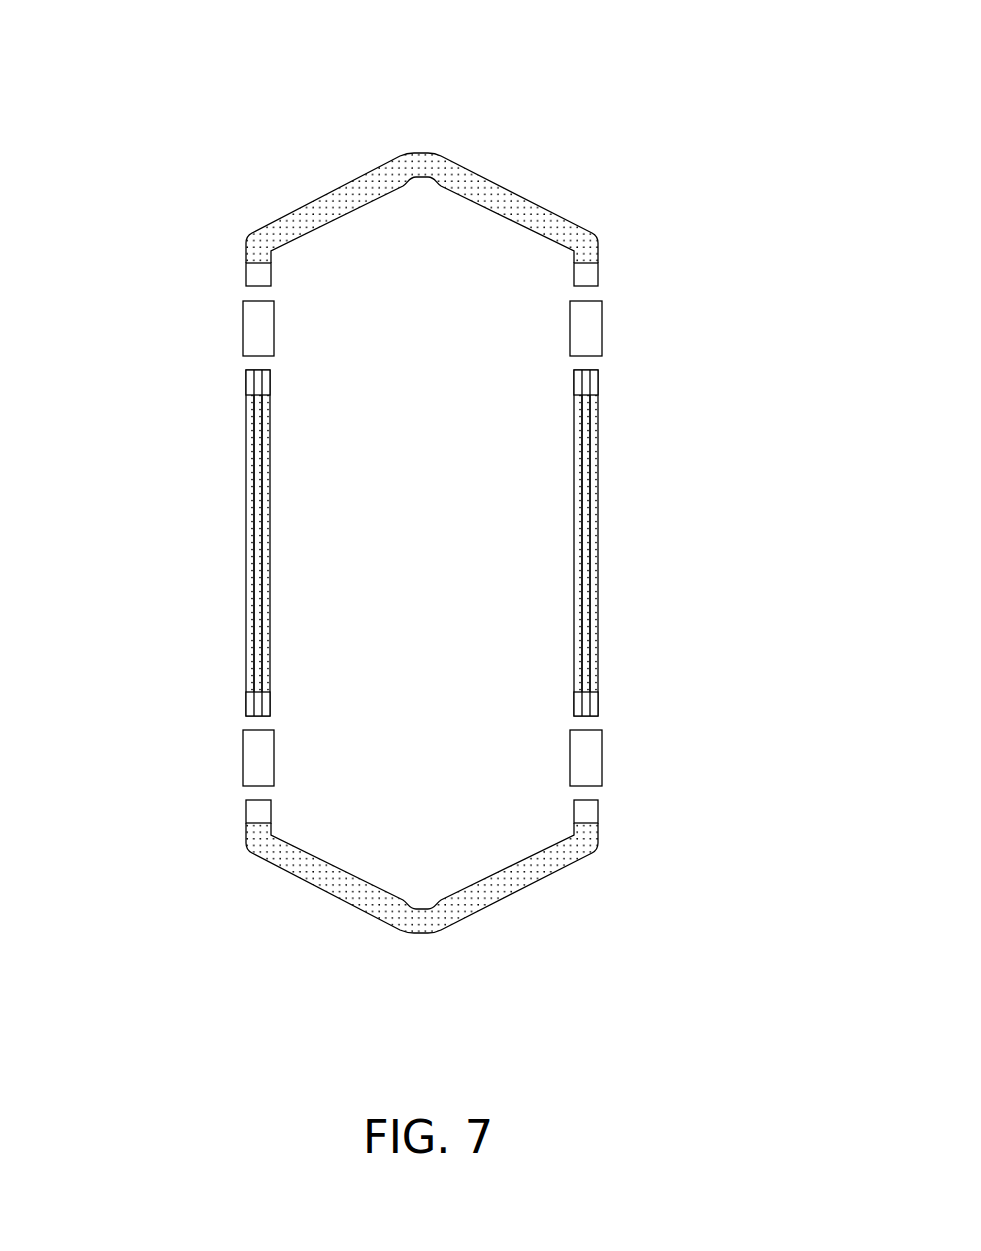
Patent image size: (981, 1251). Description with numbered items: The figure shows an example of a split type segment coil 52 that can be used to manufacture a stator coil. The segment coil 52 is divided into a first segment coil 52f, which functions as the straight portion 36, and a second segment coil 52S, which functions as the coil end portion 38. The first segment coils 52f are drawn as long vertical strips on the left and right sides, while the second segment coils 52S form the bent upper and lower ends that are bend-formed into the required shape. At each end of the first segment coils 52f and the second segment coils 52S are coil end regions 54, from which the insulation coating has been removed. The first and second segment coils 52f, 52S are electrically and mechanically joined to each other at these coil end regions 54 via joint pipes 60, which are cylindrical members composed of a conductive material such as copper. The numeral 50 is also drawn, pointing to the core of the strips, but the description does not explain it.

The split type segment coil 52 is at (327, 163).
The second segment coil 52S is at (466, 525).
The coil end portion 38 is at (480, 180).
The first segment coil 52f is at (422, 543).
The straight portion 36 is at (246, 505).
The conductor core 50 is at (267, 500).
The coil end regions 54 is at (250, 272).
The joint pipes 60 is at (250, 333).